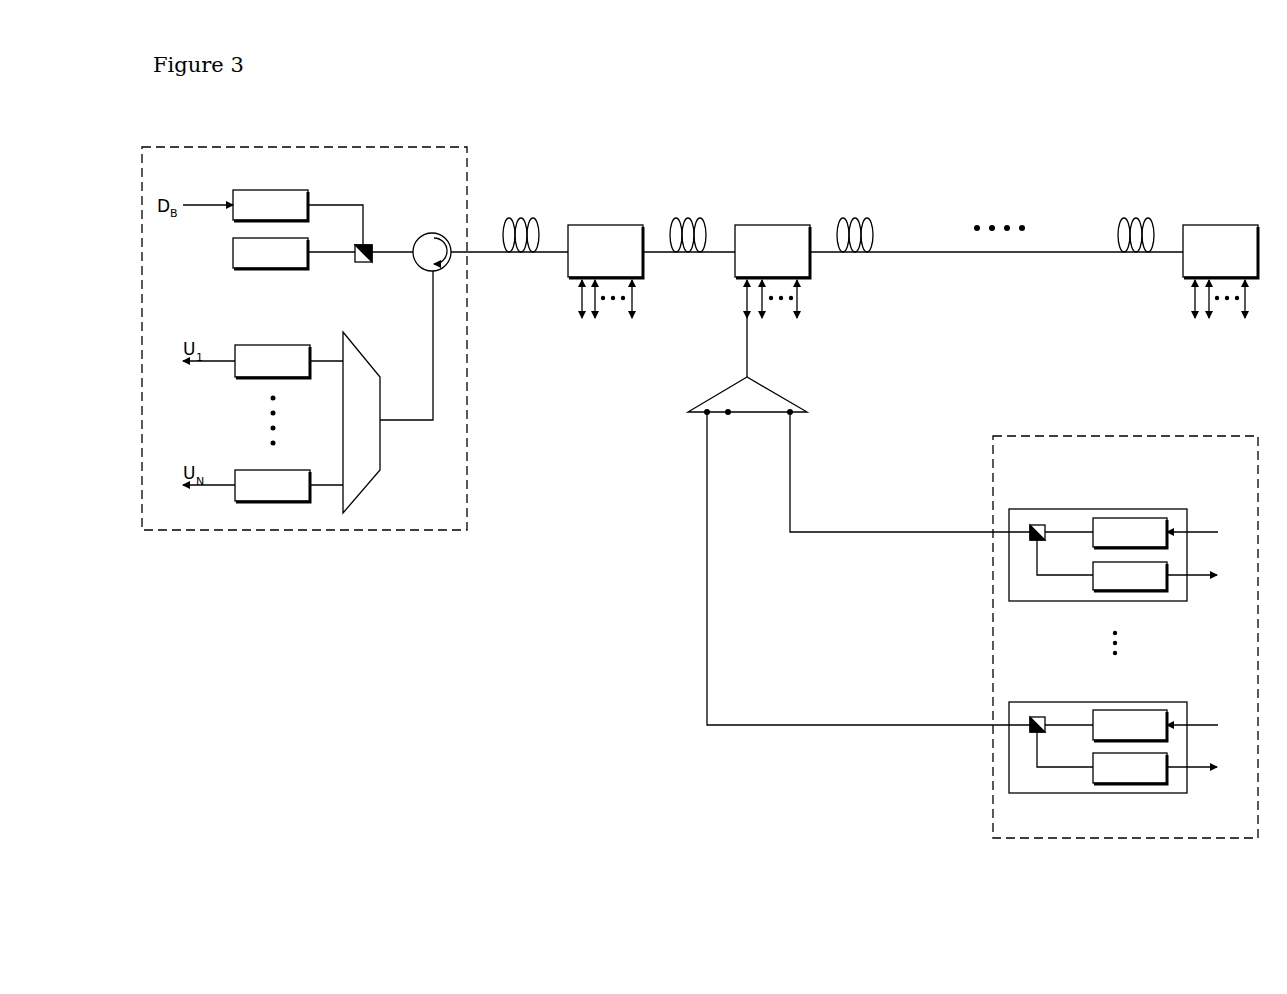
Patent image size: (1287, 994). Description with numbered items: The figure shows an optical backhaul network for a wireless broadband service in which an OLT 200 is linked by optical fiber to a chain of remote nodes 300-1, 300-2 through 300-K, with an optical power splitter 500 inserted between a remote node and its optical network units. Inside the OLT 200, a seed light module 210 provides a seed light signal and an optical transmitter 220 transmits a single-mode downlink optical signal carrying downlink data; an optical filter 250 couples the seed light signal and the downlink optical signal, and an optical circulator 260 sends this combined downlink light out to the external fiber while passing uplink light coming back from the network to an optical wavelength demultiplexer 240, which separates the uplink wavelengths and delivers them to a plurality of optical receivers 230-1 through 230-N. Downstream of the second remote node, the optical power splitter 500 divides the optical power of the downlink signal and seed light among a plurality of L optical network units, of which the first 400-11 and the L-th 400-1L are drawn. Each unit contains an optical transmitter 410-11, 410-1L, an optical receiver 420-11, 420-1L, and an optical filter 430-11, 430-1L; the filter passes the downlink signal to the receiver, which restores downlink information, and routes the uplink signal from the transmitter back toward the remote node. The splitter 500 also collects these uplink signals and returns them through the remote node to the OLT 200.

The OLT 200 is at (376, 147).
The seed light module 210 is at (293, 270).
The optical transmitter 220 is at (292, 189).
The optical receiver 230-1 is at (253, 344).
The optical receiver 230-N is at (253, 469).
The optical wavelength demultiplexer 240 is at (366, 357).
The optical filter 250 is at (363, 263).
The optical circulator 260 is at (432, 232).
The remote node 300-1 is at (622, 224).
The remote node 300-2 is at (790, 224).
The remote node 300-K is at (1238, 224).
The optical power splitter 500 is at (785, 397).
The optical network unit 400-11 is at (1128, 541).
The optical transmitter 410-11 is at (1142, 517).
The optical receiver 420-11 is at (1148, 592).
The optical filter 430-11 is at (1036, 524).
The optical network unit 400-1L is at (1128, 734).
The optical transmitter 410-1L is at (1142, 709).
The optical receiver 420-1L is at (1148, 785).
The optical filter 430-1L is at (1036, 716).